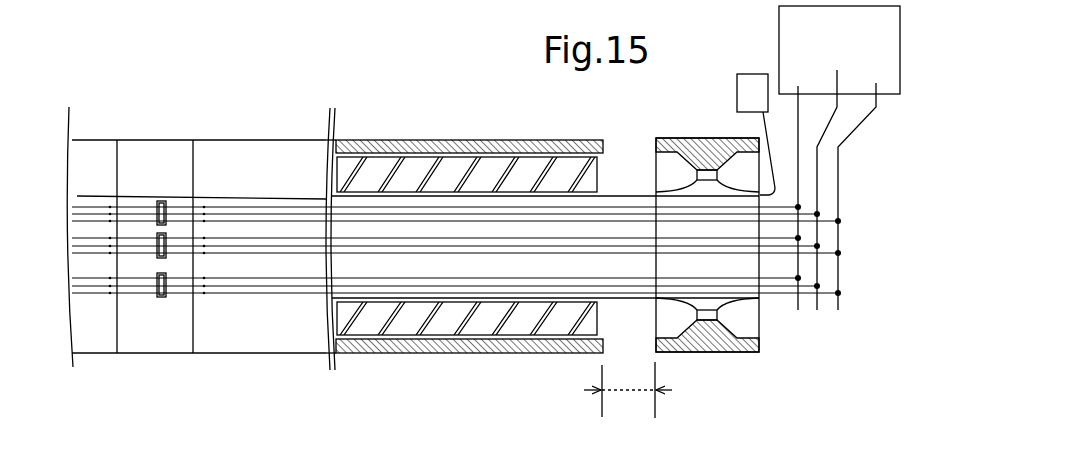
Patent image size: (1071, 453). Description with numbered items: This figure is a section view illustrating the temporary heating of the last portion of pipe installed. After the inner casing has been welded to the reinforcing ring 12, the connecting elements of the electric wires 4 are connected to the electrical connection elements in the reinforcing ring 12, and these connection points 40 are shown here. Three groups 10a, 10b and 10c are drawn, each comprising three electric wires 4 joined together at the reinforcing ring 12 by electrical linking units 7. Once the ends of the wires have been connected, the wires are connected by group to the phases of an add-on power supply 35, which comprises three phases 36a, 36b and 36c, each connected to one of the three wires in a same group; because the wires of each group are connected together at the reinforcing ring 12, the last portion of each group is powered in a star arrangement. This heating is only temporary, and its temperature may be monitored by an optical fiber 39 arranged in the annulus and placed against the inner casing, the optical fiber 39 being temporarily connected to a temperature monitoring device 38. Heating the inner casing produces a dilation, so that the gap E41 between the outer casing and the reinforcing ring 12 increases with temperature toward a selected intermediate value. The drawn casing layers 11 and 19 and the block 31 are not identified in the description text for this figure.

The reinforcing ring 12 is at (145, 139).
The optical fiber 39 is at (258, 196).
The first group of electric wires 10a is at (61, 203).
The second group of electric wires 10b is at (61, 235).
The third group of electric wires 10c is at (61, 276).
The electrical linking unit 7 is at (161, 298).
The electric wire 4 is at (250, 293).
The magnetic yoke 11 is at (469, 144).
The coil 19 is at (413, 168).
The deflection system 31 is at (656, 139).
The connection point 40 is at (648, 291).
The gap E41 is at (645, 390).
The temperature monitoring device 38 is at (756, 134).
The add-on power supply 35 is at (779, 28).
The first phase 36a is at (799, 188).
The second phase 36b is at (834, 181).
The third phase 36c is at (864, 188).